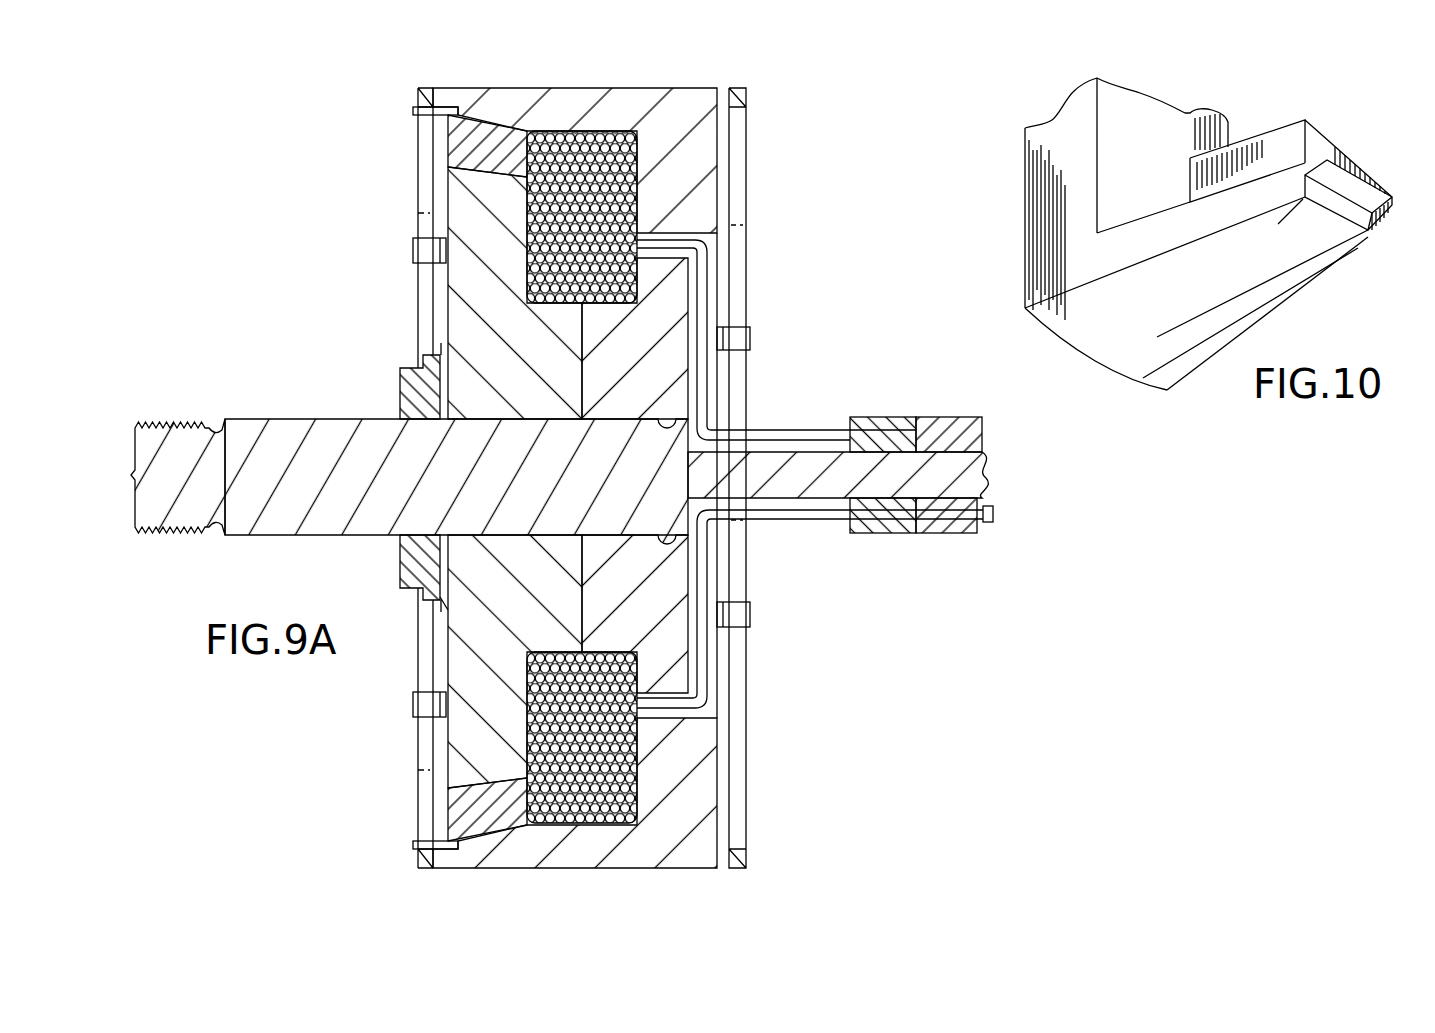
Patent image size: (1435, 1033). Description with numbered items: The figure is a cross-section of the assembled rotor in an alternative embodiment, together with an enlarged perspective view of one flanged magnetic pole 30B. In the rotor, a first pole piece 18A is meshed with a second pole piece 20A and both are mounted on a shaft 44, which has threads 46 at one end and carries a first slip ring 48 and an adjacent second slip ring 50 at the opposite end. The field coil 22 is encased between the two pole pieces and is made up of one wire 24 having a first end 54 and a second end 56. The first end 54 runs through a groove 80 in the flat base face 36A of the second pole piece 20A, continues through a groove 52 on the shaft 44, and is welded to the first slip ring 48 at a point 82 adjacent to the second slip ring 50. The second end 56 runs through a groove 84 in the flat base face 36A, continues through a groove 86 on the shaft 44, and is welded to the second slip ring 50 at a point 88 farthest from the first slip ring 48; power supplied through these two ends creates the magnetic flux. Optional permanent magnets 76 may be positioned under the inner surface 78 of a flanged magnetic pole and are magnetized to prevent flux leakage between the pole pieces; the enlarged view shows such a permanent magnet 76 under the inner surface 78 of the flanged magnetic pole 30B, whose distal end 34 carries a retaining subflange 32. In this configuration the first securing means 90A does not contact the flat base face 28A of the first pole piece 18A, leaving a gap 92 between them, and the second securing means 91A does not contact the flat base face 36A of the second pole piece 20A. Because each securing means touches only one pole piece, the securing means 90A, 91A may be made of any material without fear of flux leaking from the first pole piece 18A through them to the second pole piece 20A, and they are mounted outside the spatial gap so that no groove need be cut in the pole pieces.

In FIG. 9A, the first pole piece 18A is at (437, 302).
In FIG. 9A, the second pole piece 20A is at (817, 144).
In FIG. 9A, the field coil 22 is at (622, 182).
In FIG. 9A, the wire 24 is at (702, 263).
In FIG. 9A, the flat base face 28A is at (436, 743).
In FIG. 9A, the flanged magnetic pole 30B is at (595, 88).
In FIG. 9A, the subflange 32 is at (402, 116).
In FIG. 10, the subflange 32 is at (1396, 219).
In FIG. 10, the distal end 34 is at (1337, 274).
In FIG. 9A, the flat base face 36A is at (817, 805).
In FIG. 9A, the shaft 44 is at (313, 490).
In FIG. 9A, the threads 46 is at (165, 425).
In FIG. 9A, the first slip ring 48 is at (880, 535).
In FIG. 9A, the second slip ring 50 is at (947, 417).
In FIG. 9A, the groove 52 is at (820, 440).
In FIG. 9A, the first end 54 is at (702, 300).
In FIG. 9A, the second end 56 is at (703, 692).
In FIG. 9A, the permanent magnet 76 is at (495, 137).
In FIG. 10, the permanent magnet 76 is at (1288, 150).
In FIG. 9A, the inner surface 78 is at (444, 128).
In FIG. 10, the inner surface 78 is at (1144, 206).
In FIG. 9A, the groove 80 is at (712, 390).
In FIG. 9A, the point 82 is at (916, 417).
In FIG. 9A, the groove 84 is at (712, 648).
In FIG. 9A, the groove 86 is at (782, 508).
In FIG. 9A, the point 88 is at (994, 521).
In FIG. 9A, the first securing means 90A is at (428, 90).
In FIG. 9A, the second securing means 91A is at (748, 200).
In FIG. 9A, the gap 92 is at (433, 212).